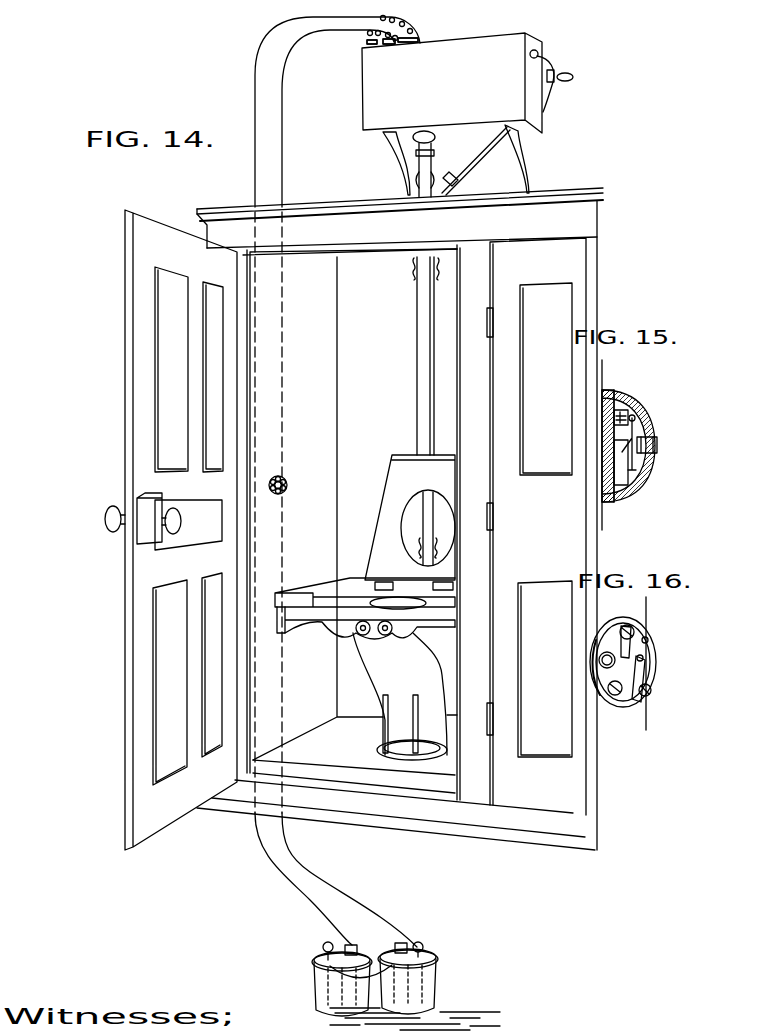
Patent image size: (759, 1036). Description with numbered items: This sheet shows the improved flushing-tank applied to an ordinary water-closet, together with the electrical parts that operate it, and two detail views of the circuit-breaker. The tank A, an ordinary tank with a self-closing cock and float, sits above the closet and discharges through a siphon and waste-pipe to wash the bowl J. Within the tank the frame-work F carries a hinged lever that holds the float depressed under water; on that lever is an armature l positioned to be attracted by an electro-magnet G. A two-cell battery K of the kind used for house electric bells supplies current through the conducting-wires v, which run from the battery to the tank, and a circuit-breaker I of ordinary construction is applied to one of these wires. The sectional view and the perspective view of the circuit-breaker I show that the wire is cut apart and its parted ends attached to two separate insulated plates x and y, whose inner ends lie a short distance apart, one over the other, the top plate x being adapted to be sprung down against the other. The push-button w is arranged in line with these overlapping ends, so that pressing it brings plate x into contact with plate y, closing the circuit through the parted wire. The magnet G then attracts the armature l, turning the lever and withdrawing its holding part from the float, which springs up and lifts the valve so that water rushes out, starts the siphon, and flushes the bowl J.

In FIG. 14, the tank A is at (452, 83).
In FIG. 14, the frame-work F is at (375, 45).
In FIG. 14, the electro-magnet G is at (394, 45).
In FIG. 14, the armature l is at (416, 40).
In FIG. 14, the conducting-wires v is at (254, 178).
In FIG. 15, the conducting-wires v is at (600, 445).
In FIG. 16, the conducting-wires v is at (652, 663).
In FIG. 14, the circuit-breaker I is at (282, 479).
In FIG. 15, the circuit-breaker I is at (628, 446).
In FIG. 14, the push-button w is at (287, 487).
In FIG. 15, the push-button w is at (658, 446).
In FIG. 14, the bowl J is at (400, 690).
In FIG. 14, the two-cell battery K is at (362, 950).
In FIG. 15, the insulated plate x is at (632, 470).
In FIG. 16, the insulated plate x is at (651, 675).
In FIG. 15, the insulated plate y is at (606, 433).
In FIG. 16, the insulated plate y is at (613, 638).
In FIG. 15, the plate z is at (606, 458).
In FIG. 16, the plate z is at (600, 675).